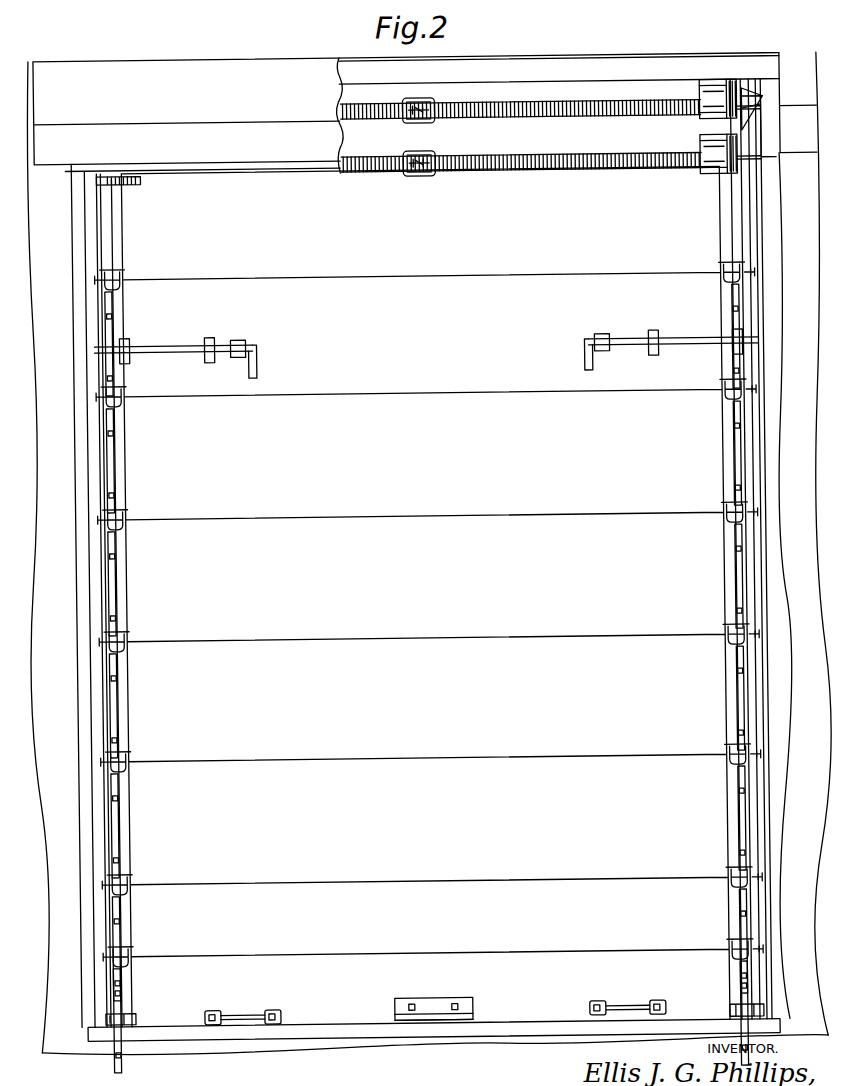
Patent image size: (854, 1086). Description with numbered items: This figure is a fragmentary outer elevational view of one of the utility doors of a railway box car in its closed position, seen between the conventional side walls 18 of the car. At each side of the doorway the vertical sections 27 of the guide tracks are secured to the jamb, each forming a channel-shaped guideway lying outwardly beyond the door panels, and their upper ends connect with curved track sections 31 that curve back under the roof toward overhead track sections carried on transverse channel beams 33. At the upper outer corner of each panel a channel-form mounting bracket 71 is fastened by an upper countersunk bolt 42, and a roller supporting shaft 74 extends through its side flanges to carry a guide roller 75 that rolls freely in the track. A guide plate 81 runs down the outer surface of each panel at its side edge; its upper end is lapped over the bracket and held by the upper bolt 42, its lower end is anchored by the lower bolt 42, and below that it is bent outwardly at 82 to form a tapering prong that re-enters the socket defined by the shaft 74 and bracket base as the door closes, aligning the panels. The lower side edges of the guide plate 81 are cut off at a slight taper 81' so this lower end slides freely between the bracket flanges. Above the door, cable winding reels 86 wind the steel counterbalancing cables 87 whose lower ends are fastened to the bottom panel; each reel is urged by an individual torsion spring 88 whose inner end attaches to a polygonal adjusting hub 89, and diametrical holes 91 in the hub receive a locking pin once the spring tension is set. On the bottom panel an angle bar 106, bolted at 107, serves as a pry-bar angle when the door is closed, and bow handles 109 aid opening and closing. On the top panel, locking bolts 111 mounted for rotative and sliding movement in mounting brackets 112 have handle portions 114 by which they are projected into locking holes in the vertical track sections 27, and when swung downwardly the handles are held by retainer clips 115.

The side wall 18 is at (41, 368).
The vertical section of guide track 27 is at (80, 492).
The curved track section 31 is at (84, 238).
The transverse channel beam 33 is at (766, 128).
The countersunk bolt 42 is at (108, 430).
The mounting bracket 71 is at (724, 432).
The roller supporting shaft 74 is at (108, 530).
The guide roller 75 is at (108, 404).
The guide plate 81 is at (142, 595).
The taper 81' is at (141, 635).
The outwardly bent portion 82 is at (126, 634).
The cable winding reel 86 is at (720, 93).
The counterbalancing cable 87 is at (118, 230).
The torsion spring 88 is at (392, 116).
The adjusting hub 89 is at (420, 98).
The holes 91 is at (440, 121).
The angle bar 106 is at (427, 1021).
The bolts 107 is at (449, 1004).
The bow handle 109 is at (238, 1008).
The locking bolt 111 is at (188, 343).
The mounting bracket 112 is at (207, 358).
The handle portion 114 is at (260, 368).
The retainer clip 115 is at (247, 338).